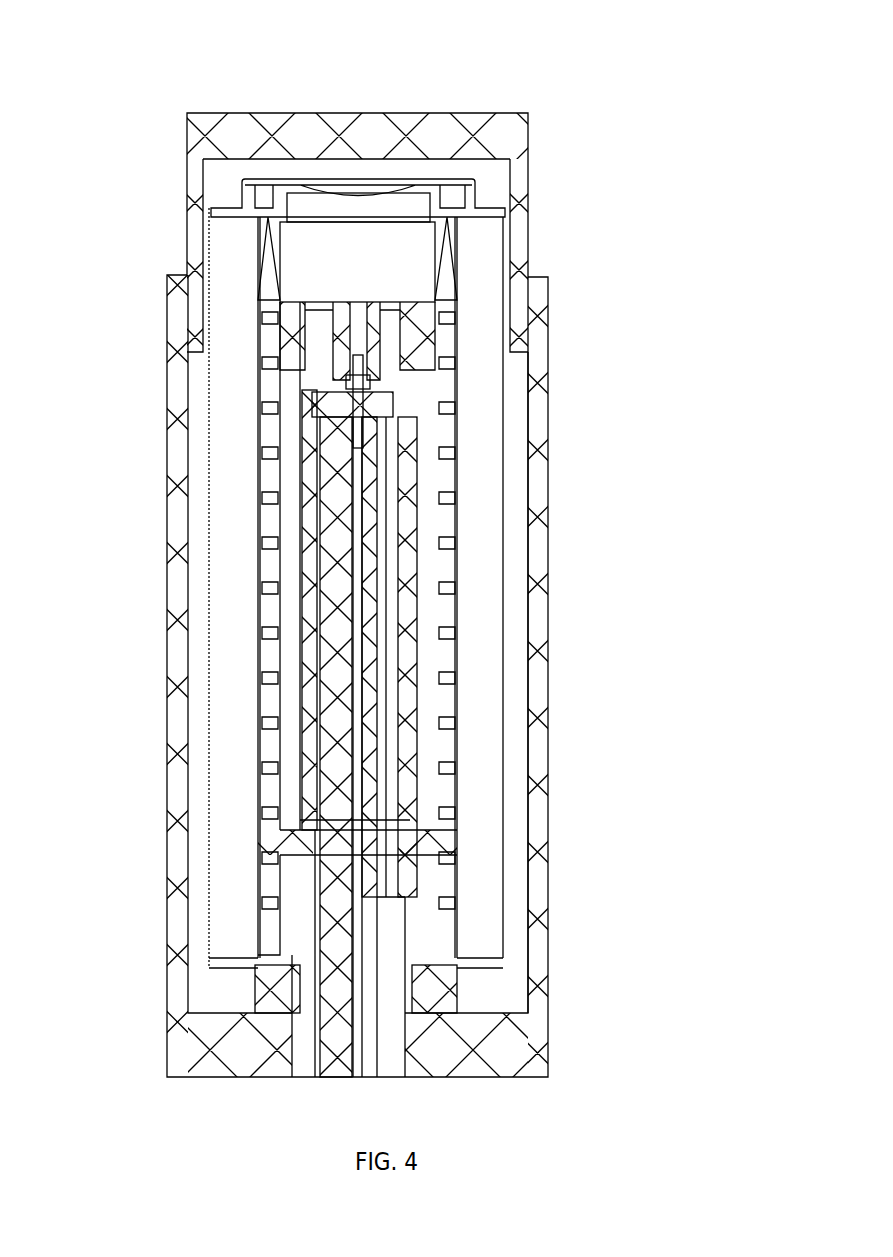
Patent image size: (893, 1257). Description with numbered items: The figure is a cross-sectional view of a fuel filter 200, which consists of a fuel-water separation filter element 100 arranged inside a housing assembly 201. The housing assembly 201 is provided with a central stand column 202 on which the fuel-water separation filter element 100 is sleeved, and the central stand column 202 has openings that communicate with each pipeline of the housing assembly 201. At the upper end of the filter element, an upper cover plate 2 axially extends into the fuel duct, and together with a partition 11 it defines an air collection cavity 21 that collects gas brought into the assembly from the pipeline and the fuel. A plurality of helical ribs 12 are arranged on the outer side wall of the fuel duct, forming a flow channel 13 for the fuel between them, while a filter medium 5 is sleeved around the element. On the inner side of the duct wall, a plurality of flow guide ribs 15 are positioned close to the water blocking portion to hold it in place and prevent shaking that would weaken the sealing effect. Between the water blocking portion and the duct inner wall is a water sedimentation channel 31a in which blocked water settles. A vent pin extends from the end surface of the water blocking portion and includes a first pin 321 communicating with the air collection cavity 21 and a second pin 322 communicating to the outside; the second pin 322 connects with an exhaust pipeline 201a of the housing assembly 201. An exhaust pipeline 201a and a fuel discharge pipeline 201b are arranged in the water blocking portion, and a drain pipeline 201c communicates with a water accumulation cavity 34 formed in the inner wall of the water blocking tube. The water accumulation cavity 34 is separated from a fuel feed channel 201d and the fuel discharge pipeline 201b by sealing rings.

The fuel filter 200 is at (379, 28).
The housing assembly 201 is at (590, 428).
The upper cover plate 2 is at (477, 205).
The air collection cavity 21 is at (430, 290).
The partition 11 is at (455, 325).
The flow guide rib 15 is at (262, 332).
The flow channel 13 is at (447, 620).
The rib 12 is at (262, 633).
The fuel-water separation filter element 100 is at (522, 552).
The filter medium 5 is at (480, 518).
The fuel feed channel 201d is at (514, 690).
The first pin 321 is at (352, 374).
The second pin 322 is at (330, 445).
The central stand column 202 is at (333, 573).
The water sedimentation channel 31a is at (290, 750).
The water accumulation cavity 34 is at (298, 912).
The drain pipeline 201c is at (300, 1010).
The exhaust pipeline 201a is at (360, 950).
The fuel discharge pipeline 201b is at (382, 783).